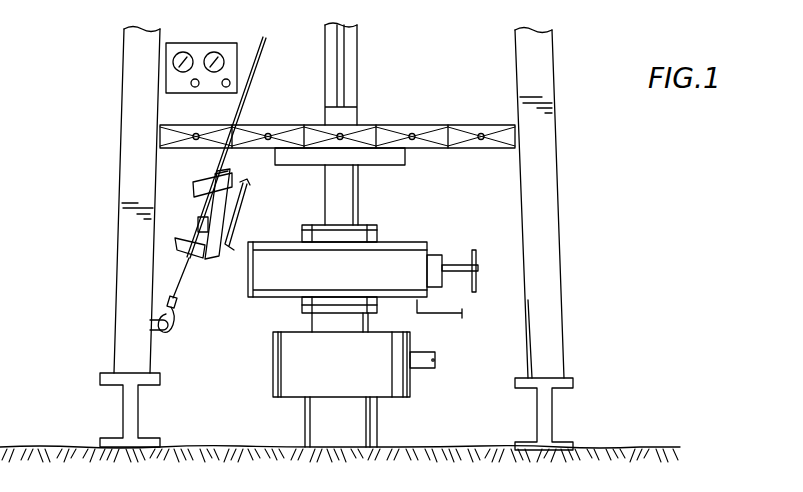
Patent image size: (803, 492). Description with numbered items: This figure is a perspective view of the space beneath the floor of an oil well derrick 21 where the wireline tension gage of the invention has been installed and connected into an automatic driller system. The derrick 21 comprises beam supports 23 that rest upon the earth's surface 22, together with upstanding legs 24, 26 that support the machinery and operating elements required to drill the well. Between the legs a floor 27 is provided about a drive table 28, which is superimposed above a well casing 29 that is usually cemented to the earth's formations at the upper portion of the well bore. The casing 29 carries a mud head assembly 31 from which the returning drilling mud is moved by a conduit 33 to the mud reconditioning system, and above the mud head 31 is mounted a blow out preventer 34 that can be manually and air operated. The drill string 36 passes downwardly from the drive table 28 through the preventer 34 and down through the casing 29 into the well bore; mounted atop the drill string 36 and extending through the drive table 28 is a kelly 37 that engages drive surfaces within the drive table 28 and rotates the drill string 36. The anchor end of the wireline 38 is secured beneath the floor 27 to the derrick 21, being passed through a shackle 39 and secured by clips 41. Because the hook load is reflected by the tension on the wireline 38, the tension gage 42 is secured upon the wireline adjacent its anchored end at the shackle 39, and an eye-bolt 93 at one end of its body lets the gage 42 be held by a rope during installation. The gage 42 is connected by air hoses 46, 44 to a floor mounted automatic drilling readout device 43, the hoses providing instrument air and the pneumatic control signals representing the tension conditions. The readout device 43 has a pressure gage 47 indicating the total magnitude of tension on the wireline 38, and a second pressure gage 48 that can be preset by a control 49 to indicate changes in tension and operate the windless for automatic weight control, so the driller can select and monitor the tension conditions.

The oil well derrick 21 is at (550, 337).
The earth's surface 22 is at (26, 446).
The beam supports 23 is at (553, 419).
The upstanding leg 24 is at (548, 225).
The upstanding leg 26 is at (118, 258).
The floor 27 is at (465, 125).
The drive table 28 is at (405, 162).
The well casing 29 is at (365, 428).
The mud head assembly 31 is at (280, 377).
The conduit 33 is at (430, 353).
The blow out preventer 34 is at (418, 247).
The drill string 36 is at (347, 207).
The kelly 37 is at (352, 68).
The wireline 38 is at (257, 78).
The shackle 39 is at (153, 332).
The clips 41 is at (178, 305).
The tension gage 42 is at (207, 242).
The automatic drilling readout device 43 is at (148, 73).
The air hose 44 is at (246, 176).
The air hose 46 is at (243, 207).
The pressure gage 47 is at (178, 53).
The second pressure gage 48 is at (205, 69).
The control 49 is at (193, 88).
The eye-bolt 93 is at (236, 176).